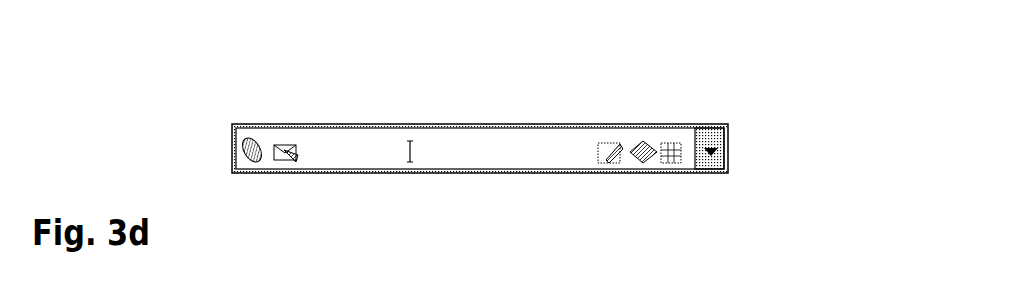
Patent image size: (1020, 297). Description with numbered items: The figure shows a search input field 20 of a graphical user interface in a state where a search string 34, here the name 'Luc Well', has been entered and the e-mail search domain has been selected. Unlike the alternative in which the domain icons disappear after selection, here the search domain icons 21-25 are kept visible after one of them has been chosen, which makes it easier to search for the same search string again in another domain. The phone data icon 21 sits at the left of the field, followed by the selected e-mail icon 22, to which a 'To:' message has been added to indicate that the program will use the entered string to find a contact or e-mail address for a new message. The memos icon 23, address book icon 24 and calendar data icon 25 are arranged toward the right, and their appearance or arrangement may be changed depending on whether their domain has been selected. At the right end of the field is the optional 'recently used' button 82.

The search input field 20 is at (553, 127).
The phone data search domain icon 21 is at (258, 157).
The e-mail data search domain icon 22 is at (287, 128).
The memos search domain icon 23 is at (612, 164).
The address book search domain icon 24 is at (651, 127).
The calendar data search domain icon 25 is at (672, 164).
The search string 34 is at (357, 128).
The recently used button 82 is at (728, 150).